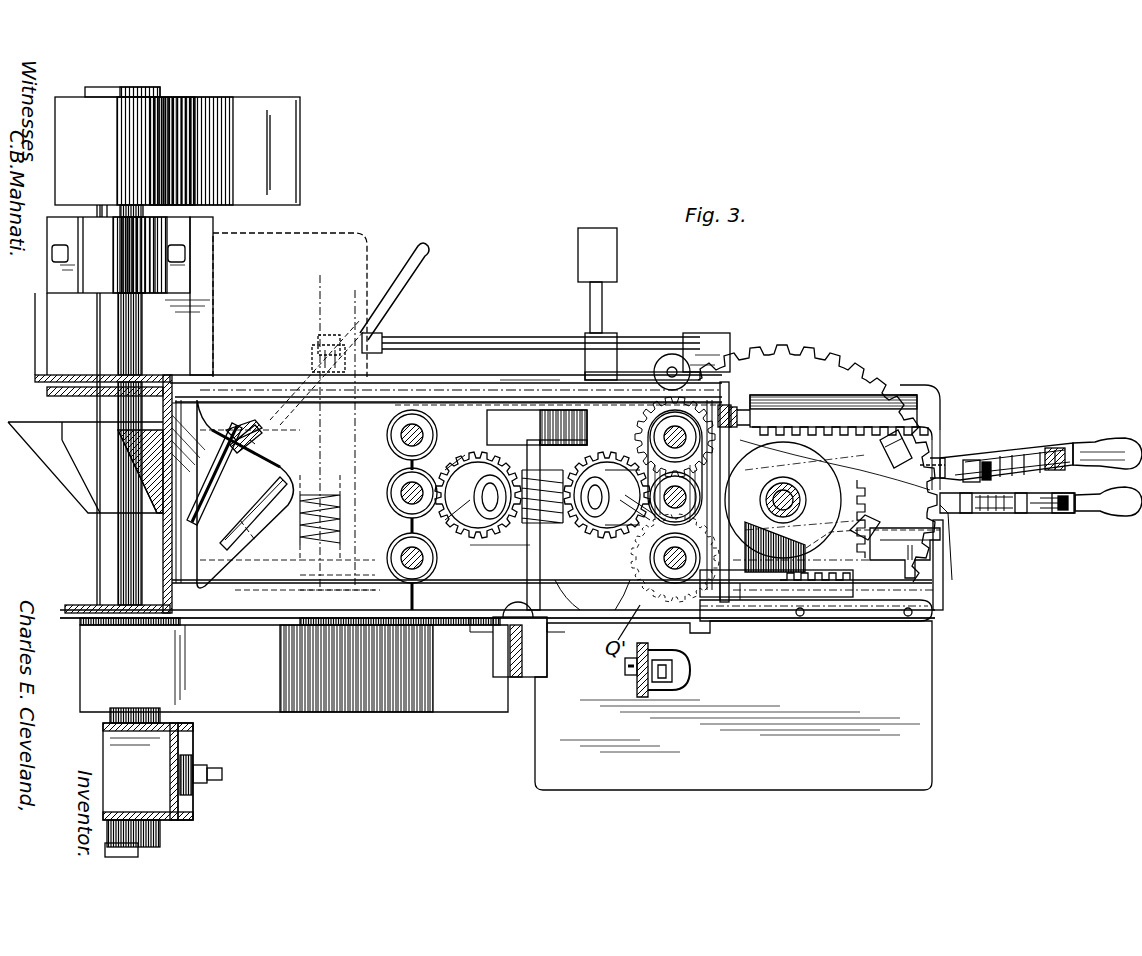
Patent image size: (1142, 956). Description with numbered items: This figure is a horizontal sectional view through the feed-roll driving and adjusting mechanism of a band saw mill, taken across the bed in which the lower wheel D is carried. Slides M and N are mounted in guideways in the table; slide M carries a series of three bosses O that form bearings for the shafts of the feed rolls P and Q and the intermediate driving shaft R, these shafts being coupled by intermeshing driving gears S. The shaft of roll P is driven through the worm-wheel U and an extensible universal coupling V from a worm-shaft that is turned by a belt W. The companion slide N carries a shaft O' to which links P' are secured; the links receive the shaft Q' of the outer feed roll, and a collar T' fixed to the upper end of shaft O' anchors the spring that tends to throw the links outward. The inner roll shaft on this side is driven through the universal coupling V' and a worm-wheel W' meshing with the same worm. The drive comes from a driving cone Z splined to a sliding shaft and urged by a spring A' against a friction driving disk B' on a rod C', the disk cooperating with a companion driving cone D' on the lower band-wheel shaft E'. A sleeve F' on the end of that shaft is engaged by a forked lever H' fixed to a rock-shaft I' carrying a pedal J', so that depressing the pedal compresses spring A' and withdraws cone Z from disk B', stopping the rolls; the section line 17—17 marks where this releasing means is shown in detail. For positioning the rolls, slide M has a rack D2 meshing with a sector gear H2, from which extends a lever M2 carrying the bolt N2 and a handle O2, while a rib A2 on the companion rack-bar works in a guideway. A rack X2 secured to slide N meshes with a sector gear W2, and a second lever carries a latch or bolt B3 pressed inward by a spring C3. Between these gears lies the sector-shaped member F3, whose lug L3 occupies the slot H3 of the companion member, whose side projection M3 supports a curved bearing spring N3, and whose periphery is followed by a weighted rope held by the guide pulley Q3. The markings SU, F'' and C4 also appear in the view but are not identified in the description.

The rock-shaft I' is at (530, 298).
The pedal J' is at (639, 304).
The guide pulley Q3 is at (668, 355).
The bosses O is at (391, 435).
The intermediate driving shaft R is at (398, 500).
The feed roll P is at (391, 558).
The shaft Q' is at (705, 395).
The shaft O' is at (705, 480).
The links P' is at (699, 477).
The driving gears S is at (470, 560).
The extensible universal coupling V is at (509, 510).
The extensible universal coupling V' is at (587, 520).
The worm-wheel U is at (587, 425).
The worm-wheel W' is at (609, 514).
The gear hub SU is at (500, 559).
The belt W is at (530, 389).
The feed roll Q is at (557, 390).
The sector-shaped member F3 is at (812, 354).
The sector-gear W2 is at (788, 507).
The rack X2 is at (880, 432).
The slot or opening H3 is at (886, 452).
The lever M2 is at (1048, 436).
The second bolt N2 is at (970, 460).
The lug L3 is at (945, 463).
The handle O2 is at (1107, 465).
The rib A2 is at (955, 505).
The spring C3 is at (1000, 510).
The curved bearing spring N3 is at (870, 540).
The lug or projection M3 is at (893, 560).
The latch or bolt B3 is at (952, 580).
The sleeve F' is at (831, 616).
The companion driving cone D' is at (85, 467).
The lower band-wheel shaft E' is at (101, 493).
The driving cone Z is at (232, 494).
The friction driving disk B' is at (224, 472).
The rod C' is at (253, 495).
The spring A' is at (325, 512).
The section line 17 is at (337, 431).
The small block F'' is at (292, 320).
The forked lever H' is at (298, 349).
The lower wheel D is at (294, 668).
The slide M is at (245, 600).
The support C4 is at (480, 625).
The rack D2 is at (828, 595).
The sector gear H2 is at (760, 630).
The collar T' is at (592, 620).
The slide N is at (740, 610).